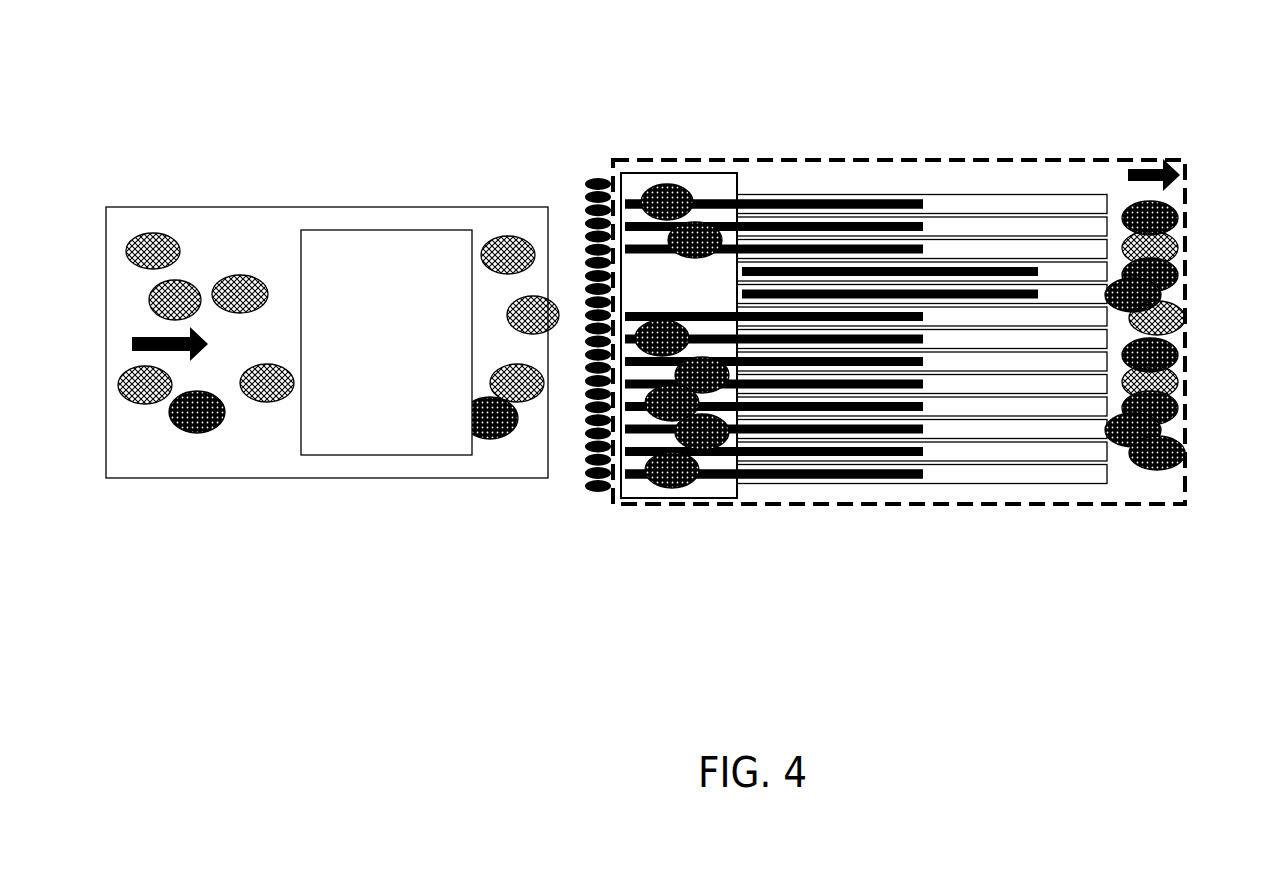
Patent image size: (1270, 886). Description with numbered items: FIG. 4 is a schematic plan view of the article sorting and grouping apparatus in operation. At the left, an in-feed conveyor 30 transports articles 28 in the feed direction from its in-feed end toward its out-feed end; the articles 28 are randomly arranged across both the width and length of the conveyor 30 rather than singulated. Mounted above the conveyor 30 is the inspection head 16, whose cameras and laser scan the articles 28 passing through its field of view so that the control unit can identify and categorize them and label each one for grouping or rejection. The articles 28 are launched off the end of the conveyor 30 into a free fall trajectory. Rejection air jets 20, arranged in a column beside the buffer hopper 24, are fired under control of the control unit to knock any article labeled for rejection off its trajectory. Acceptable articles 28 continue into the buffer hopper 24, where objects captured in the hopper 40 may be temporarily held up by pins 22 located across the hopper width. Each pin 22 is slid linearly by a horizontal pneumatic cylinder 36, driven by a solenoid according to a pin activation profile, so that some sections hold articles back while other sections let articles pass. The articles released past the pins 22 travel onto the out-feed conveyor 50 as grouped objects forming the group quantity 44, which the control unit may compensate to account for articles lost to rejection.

The conveyor 30 is at (188, 226).
The articles 28 is at (210, 430).
The inspection head 16 is at (375, 250).
The out-feed conveyor 50 is at (958, 160).
The rejection air jets 20 is at (597, 177).
The horizontal pneumatic cylinders 36 is at (1044, 457).
The pins 22 is at (824, 486).
The buffer hopper 24 is at (723, 178).
The objects captured in buffer hopper 40 is at (672, 494).
The group quantity 44 is at (1145, 203).